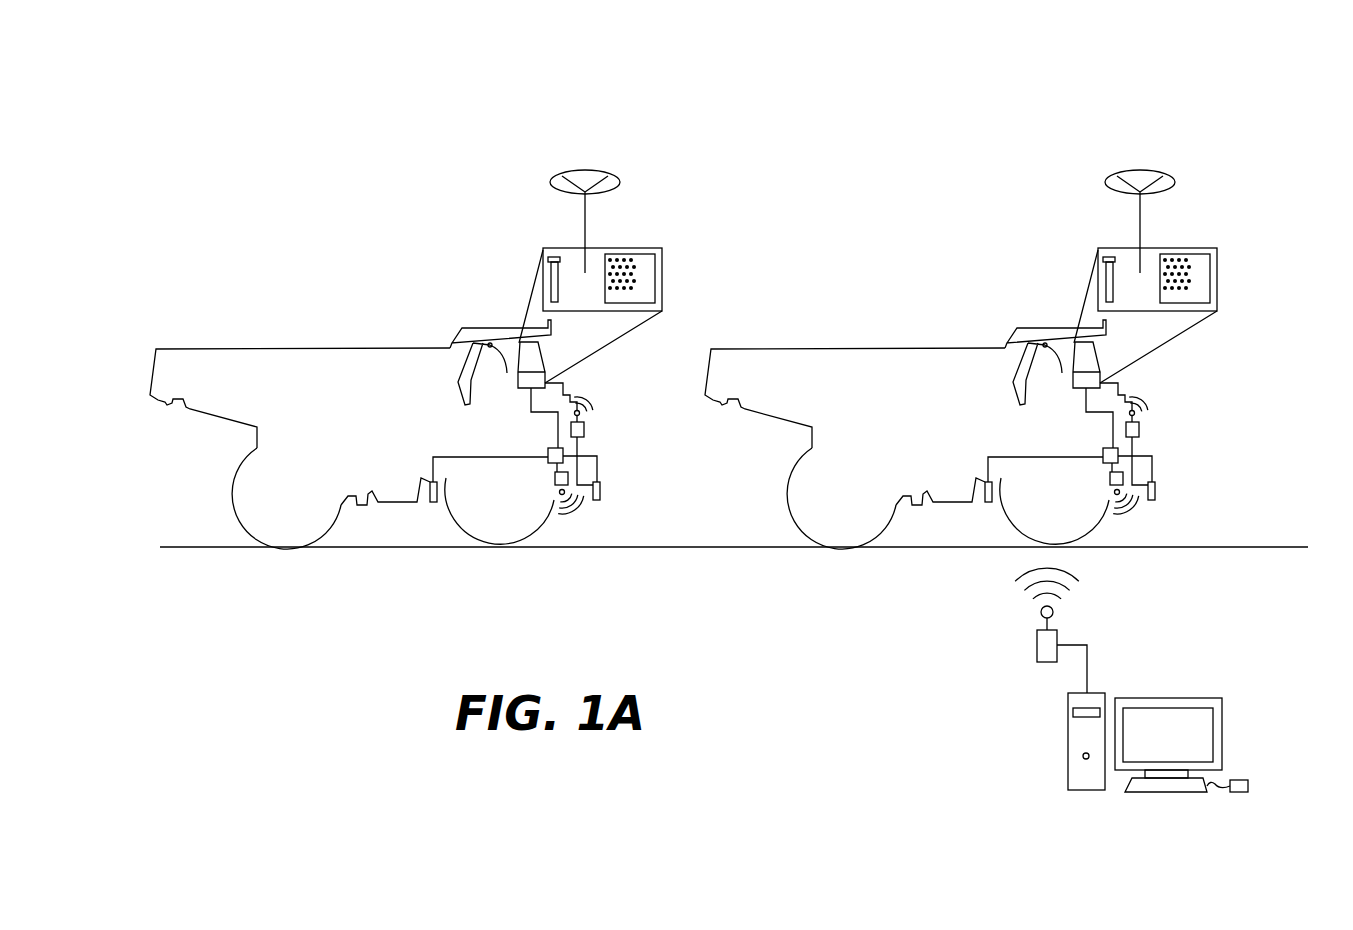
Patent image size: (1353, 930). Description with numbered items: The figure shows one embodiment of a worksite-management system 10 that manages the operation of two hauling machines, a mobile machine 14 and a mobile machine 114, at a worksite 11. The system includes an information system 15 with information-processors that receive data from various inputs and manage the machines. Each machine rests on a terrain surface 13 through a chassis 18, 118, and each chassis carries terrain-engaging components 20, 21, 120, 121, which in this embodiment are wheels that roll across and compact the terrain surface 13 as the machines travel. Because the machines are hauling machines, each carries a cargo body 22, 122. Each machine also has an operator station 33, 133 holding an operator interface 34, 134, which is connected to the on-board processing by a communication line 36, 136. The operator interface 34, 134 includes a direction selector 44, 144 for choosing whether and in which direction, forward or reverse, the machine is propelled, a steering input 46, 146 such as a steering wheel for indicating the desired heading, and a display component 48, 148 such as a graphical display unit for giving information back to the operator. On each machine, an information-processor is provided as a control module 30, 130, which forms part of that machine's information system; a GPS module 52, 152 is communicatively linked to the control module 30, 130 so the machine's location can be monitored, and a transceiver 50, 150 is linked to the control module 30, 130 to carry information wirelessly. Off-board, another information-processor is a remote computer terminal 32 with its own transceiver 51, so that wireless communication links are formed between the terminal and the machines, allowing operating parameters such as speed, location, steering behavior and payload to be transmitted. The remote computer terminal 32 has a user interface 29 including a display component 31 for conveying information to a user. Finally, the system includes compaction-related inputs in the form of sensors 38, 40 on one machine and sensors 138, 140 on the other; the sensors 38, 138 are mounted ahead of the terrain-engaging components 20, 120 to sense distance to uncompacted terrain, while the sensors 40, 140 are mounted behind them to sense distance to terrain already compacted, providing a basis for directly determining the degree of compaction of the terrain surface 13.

The worksite-management system 10 is at (798, 190).
The worksite 11 is at (714, 580).
The terrain surface 13 is at (680, 547).
The mobile machine 14 is at (391, 344).
The information system 15 is at (1244, 503).
The chassis 18 is at (400, 488).
The terrain-engaging component 20 is at (545, 522).
The terrain-engaging component 21 is at (246, 522).
The cargo body 22 is at (222, 352).
The user interface 29 is at (1220, 740).
The control module 30 is at (578, 440).
The display component 31 is at (1143, 733).
The remote computer terminal 32 is at (1163, 736).
The operator station 33 is at (476, 347).
The operator interface 34 is at (615, 248).
The communication line 36 is at (530, 400).
The sensor 38 is at (601, 500).
The sensor 40 is at (433, 503).
The direction selector 44 is at (555, 257).
The steering input 46 is at (585, 171).
The display component 48 is at (620, 297).
The transceiver 50 is at (553, 478).
The transceiver 51 is at (1037, 650).
The GPS module 52 is at (588, 430).
The mobile machine 114 is at (932, 345).
The chassis 118 is at (952, 492).
The terrain-engaging component 120 is at (1100, 522).
The terrain-engaging component 121 is at (803, 504).
The cargo body 122 is at (803, 355).
The control module 130 is at (1133, 440).
The operator station 133 is at (1031, 347).
The operator interface 134 is at (1172, 248).
The communication line 136 is at (1085, 398).
The sensor 138 is at (1157, 489).
The sensor 140 is at (988, 503).
The direction selector 144 is at (1110, 257).
The steering input 146 is at (1139, 171).
The display component 148 is at (1175, 297).
The transceiver 150 is at (1108, 478).
The GPS module 152 is at (1143, 430).